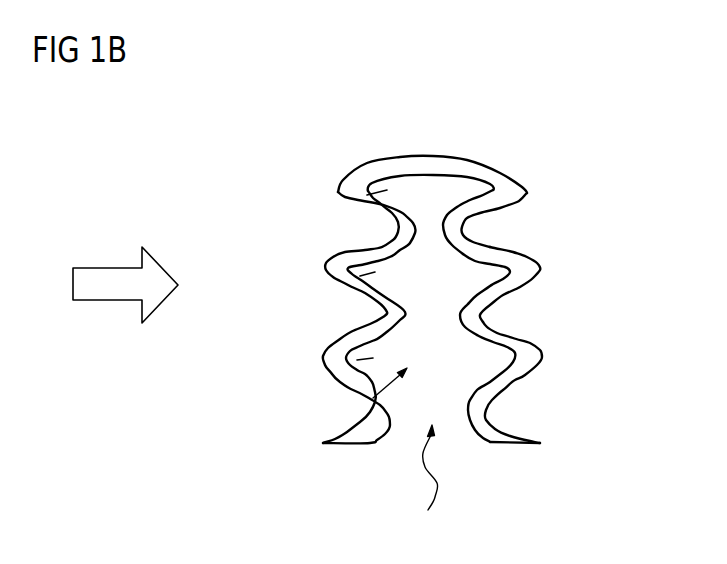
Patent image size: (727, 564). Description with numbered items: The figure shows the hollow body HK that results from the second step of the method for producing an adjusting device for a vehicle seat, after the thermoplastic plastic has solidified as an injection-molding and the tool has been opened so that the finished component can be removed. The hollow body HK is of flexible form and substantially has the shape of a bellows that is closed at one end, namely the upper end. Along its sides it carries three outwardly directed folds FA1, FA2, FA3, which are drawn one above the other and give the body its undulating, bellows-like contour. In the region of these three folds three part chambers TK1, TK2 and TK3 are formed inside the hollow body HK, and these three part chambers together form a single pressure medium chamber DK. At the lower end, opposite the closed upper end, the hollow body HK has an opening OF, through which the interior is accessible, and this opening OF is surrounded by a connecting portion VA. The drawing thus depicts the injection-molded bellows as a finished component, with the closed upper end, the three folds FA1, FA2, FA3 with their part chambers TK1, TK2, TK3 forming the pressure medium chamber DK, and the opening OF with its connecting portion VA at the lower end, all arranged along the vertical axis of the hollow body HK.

The hollow body HK is at (445, 167).
The third part chamber TK3 is at (338, 193).
The second part chamber TK2 is at (326, 267).
The first part chamber TK1 is at (323, 355).
The third fold FA3 is at (527, 194).
The second fold FA2 is at (540, 269).
The first fold FA1 is at (541, 356).
The pressure medium chamber DK is at (368, 401).
The opening OF is at (430, 484).
The connecting portion VA is at (500, 436).